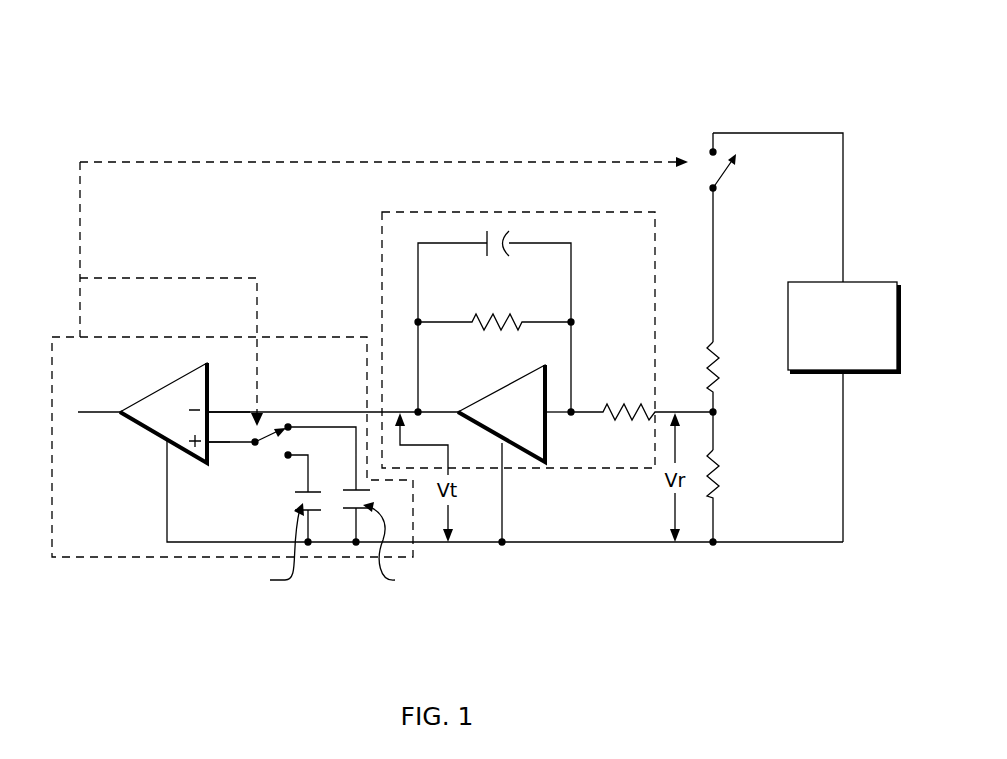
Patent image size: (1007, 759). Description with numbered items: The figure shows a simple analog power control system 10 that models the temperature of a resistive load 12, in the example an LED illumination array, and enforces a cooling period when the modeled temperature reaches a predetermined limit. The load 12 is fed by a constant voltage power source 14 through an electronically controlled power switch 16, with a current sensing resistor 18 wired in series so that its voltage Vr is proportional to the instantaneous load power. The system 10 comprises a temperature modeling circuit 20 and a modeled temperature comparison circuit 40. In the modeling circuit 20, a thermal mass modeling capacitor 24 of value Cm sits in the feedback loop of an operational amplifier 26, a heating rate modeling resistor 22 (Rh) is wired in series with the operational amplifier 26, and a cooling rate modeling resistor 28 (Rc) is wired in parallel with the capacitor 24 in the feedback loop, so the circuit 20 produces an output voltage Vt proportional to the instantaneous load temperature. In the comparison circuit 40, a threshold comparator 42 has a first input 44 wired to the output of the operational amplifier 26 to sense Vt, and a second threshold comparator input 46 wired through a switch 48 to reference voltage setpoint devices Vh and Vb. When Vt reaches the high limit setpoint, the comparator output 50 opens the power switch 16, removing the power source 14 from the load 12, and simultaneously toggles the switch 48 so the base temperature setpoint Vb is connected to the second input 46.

The power control system 10 is at (603, 87).
The resistive load 12 is at (722, 360).
The constant voltage power source 14 is at (855, 282).
The power switch 16 is at (733, 172).
The current sensing resistor 18 is at (722, 480).
The temperature modeling circuit 20 is at (393, 212).
The heating rate modeling resistor 22 is at (623, 403).
The thermal mass modeling capacitor 24 is at (493, 233).
The operational amplifier 26 is at (548, 437).
The cooling rate modeling resistor 28 is at (497, 315).
The modeled temperature comparison circuit 40 is at (183, 558).
The threshold comparator 42 is at (140, 422).
The first input 44 is at (209, 410).
The second threshold comparator input 46 is at (220, 447).
The switch 48 is at (274, 434).
The comparator output 50 is at (80, 253).